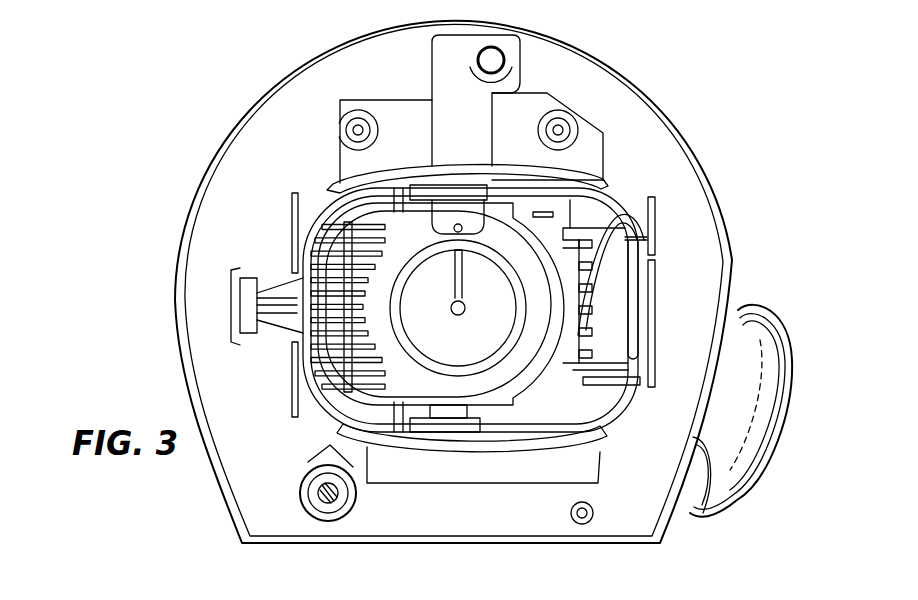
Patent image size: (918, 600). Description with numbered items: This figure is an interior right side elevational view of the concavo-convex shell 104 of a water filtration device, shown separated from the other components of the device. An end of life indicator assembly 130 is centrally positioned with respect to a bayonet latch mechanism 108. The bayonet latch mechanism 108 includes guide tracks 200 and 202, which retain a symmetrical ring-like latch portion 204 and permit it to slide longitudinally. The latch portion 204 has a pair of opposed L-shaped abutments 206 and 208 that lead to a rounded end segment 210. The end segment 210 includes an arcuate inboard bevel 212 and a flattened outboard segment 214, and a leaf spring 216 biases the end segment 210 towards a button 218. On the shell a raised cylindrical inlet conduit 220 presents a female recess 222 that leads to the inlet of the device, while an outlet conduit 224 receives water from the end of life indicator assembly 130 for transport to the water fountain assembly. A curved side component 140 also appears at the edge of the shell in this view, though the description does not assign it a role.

The concavo-convex shell 104 is at (124, 204).
The bayonet latch mechanism 108 is at (270, 262).
The end of life indicator assembly 130 is at (404, 265).
The handle loop 140 is at (742, 304).
The guide track 200 is at (332, 182).
The guide track 202 is at (330, 430).
The latch portion 204 is at (320, 363).
The L-shaped abutment 206 is at (450, 192).
The L-shaped abutment 208 is at (450, 455).
The end segment 210 is at (541, 240).
The arcuate inboard bevel 212 is at (540, 356).
The flattened outboard segment 214 is at (573, 270).
The leaf spring 216 is at (643, 288).
The button 218 is at (250, 300).
The raised cylindrical inlet conduit 220 is at (308, 510).
The female recess 222 is at (318, 494).
The outlet conduit 224 is at (504, 52).